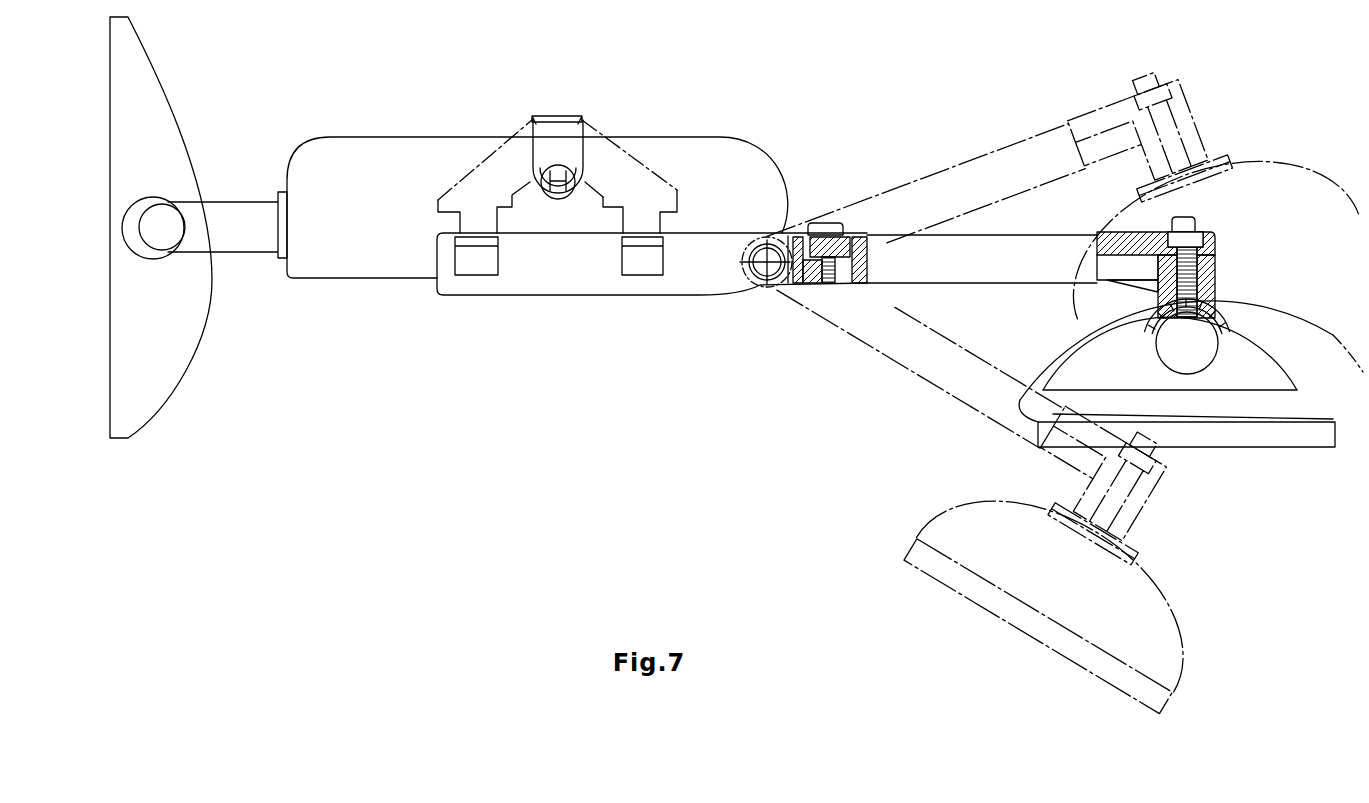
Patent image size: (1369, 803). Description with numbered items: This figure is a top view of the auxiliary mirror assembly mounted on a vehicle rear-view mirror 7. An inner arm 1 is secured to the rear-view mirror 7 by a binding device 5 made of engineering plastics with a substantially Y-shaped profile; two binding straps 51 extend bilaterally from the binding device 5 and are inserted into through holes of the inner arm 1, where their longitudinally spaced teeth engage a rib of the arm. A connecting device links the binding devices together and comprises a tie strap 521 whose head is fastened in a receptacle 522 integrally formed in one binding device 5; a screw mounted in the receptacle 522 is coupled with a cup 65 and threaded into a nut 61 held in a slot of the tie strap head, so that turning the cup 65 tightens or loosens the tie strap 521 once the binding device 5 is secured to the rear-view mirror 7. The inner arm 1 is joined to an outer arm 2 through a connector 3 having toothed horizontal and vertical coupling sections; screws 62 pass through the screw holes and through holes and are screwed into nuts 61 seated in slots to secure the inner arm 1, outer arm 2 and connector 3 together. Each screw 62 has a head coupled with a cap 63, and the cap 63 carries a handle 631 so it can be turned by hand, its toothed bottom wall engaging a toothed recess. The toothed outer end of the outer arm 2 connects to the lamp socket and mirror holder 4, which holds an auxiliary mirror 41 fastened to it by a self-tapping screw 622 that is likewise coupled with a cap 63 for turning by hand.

The inner arm 1 is at (571, 277).
The outer arm 2 is at (962, 203).
The connector 3 is at (1003, 265).
The lamp socket and mirror holder 4 is at (1182, 294).
The binding device 5 is at (630, 163).
The rear-view mirror 7 is at (332, 268).
The auxiliary mirror 41 is at (1148, 588).
The binding strap 51 is at (478, 262).
The nut 61 is at (805, 283).
The screw 62 is at (827, 290).
The cap 63 is at (758, 287).
The cup 65 is at (537, 194).
The tie strap 521 is at (532, 114).
The receptacle 522 is at (552, 116).
The self-tapping screw 622 is at (1217, 263).
The handle 631 is at (848, 190).